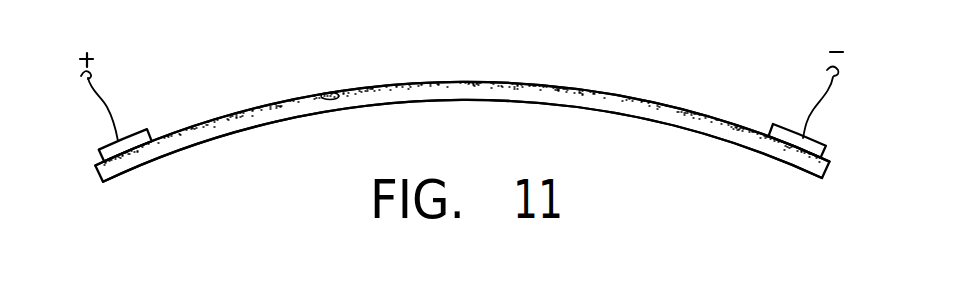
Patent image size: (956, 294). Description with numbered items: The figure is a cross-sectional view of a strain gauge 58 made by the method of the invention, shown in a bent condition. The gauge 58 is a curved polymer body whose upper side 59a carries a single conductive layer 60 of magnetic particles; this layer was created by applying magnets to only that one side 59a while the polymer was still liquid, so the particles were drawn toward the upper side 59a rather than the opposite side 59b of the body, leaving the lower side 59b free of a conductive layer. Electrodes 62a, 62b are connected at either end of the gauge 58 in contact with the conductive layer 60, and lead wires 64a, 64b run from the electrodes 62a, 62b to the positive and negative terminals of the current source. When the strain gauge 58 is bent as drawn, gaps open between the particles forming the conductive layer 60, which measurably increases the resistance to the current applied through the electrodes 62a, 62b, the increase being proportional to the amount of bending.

The strain gauge 58 is at (273, 63).
The upper side of the gauge 59a is at (541, 82).
The second surface of piezoelectric element 59b is at (557, 106).
The conductive layer 60 is at (343, 88).
The electrode 62a is at (96, 157).
The electrode 62b is at (829, 158).
The first lead wire 64a is at (109, 107).
The second lead wire 64b is at (812, 110).